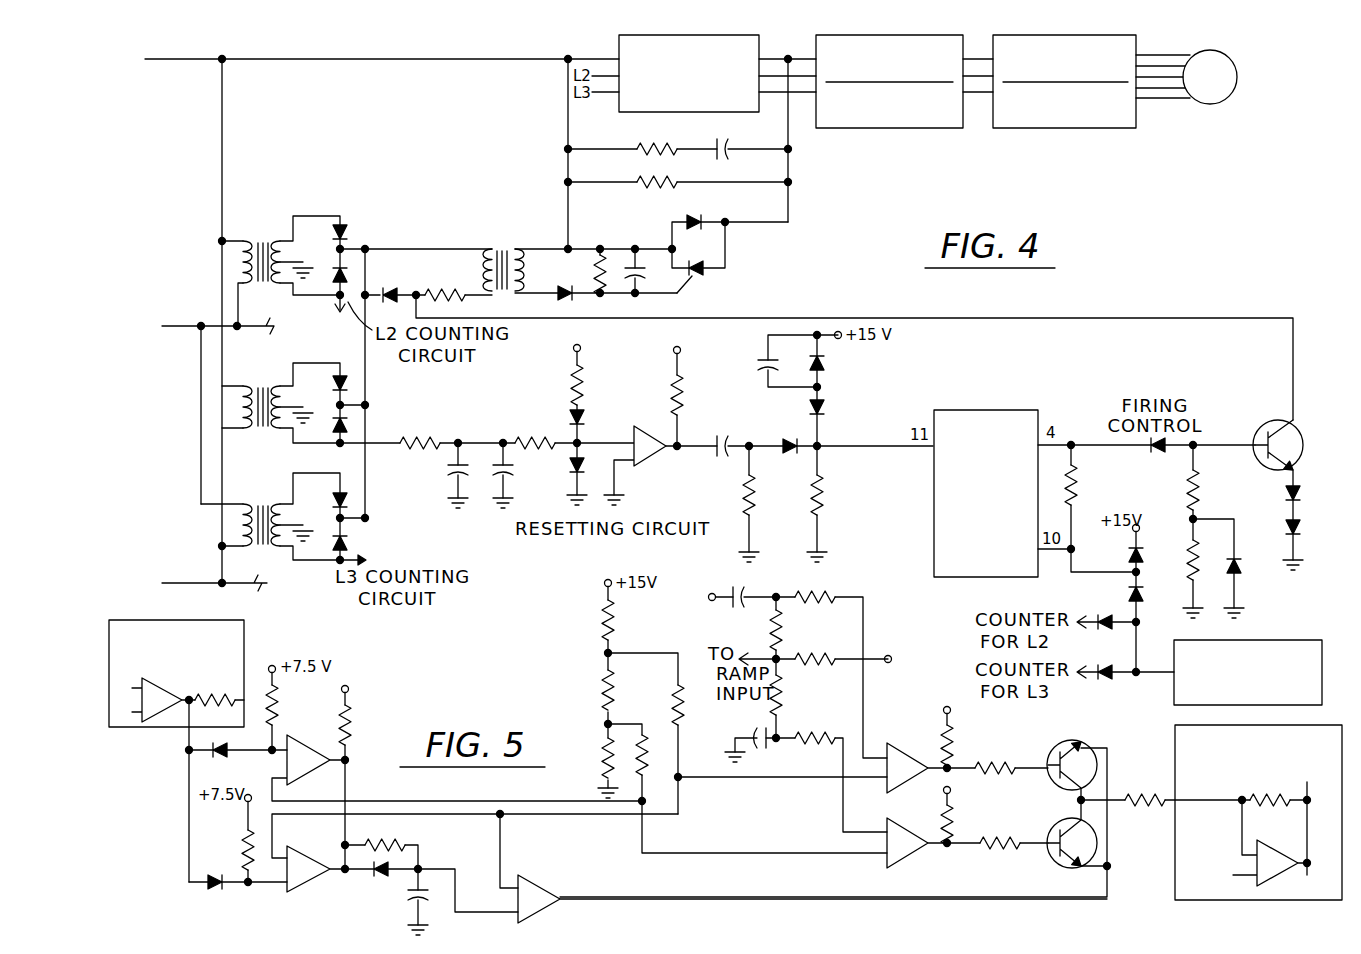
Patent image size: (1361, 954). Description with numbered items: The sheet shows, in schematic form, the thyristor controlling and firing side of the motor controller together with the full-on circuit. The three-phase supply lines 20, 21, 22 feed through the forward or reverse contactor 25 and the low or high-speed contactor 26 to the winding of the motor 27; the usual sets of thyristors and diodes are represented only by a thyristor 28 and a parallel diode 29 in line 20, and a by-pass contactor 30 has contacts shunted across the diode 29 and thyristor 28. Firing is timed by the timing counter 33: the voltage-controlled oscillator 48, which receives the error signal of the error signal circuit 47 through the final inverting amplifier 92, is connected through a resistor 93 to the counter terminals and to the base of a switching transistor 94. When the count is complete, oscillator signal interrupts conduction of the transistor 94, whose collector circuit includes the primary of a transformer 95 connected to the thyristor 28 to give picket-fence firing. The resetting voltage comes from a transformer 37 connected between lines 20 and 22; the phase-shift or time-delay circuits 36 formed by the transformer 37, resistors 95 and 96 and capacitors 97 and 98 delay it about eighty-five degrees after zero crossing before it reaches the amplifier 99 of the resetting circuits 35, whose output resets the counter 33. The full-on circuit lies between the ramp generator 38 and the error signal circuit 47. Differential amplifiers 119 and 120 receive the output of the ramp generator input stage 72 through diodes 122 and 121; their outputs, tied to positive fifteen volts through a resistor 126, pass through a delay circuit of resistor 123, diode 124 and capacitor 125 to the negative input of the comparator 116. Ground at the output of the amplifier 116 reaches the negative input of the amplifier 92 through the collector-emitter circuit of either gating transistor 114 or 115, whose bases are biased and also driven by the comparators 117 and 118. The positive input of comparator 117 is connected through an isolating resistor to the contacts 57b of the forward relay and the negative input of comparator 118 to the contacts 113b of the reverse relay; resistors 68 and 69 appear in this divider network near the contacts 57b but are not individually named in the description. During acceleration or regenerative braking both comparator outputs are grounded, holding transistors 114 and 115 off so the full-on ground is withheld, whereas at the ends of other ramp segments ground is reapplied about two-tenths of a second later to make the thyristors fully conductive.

In FIG. 4, the line L1 20 is at (182, 58).
In FIG. 4, the line L2 21 is at (182, 337).
In FIG. 4, the line L3 22 is at (176, 590).
In FIG. 4, the forward or reverse contactor 25 is at (956, 128).
In FIG. 4, the low or high-speed contactor 26 is at (1131, 128).
In FIG. 4, the motor 27 is at (1204, 103).
In FIG. 4, the thyristor 28 is at (704, 276).
In FIG. 4, the parallel diode 29 is at (704, 218).
In FIG. 4, the by-pass contactor 30 is at (656, 113).
In FIG. 4, the timing counter 33 is at (990, 410).
In FIG. 4, the counter resetting circuits 35 is at (644, 413).
In FIG. 4, the phase-shift or time-delay circuits 36 is at (484, 413).
In FIG. 4, the transformer 37 is at (295, 405).
In FIG. 5, the ramp generator 38 is at (244, 658).
In FIG. 5, the error signal circuit 47 is at (1175, 752).
In FIG. 4, the voltage-controlled oscillator 48 is at (1268, 642).
In FIG. 5, the contacts of the forward relay 57b is at (728, 593).
In FIG. 5, the resistor 68 is at (790, 652).
In FIG. 5, the resistor 69 is at (834, 669).
In FIG. 5, the input stage of the ramp generator 72 is at (176, 696).
In FIG. 5, the final inverting amplifier 92 is at (1284, 846).
In FIG. 4, the resistor 93 is at (1077, 494).
In FIG. 4, the switching transistor 94 is at (1300, 452).
In FIG. 4, the transformer 95 is at (512, 248).
In FIG. 4, the resistor 96 is at (551, 436).
In FIG. 4, the capacitor 97 is at (436, 475).
In FIG. 4, the capacitor 98 is at (512, 474).
In FIG. 4, the amplifier 99 is at (660, 462).
In FIG. 5, the contacts of the reverse relay 113b is at (774, 733).
In FIG. 5, the transistor 114 is at (1070, 749).
In FIG. 5, the transistor 115 is at (1059, 838).
In FIG. 5, the differential amplifier or comparator 116 is at (540, 890).
In FIG. 5, the differential comparator 117 is at (919, 758).
In FIG. 5, the differential comparator 118 is at (919, 840).
In FIG. 5, the differential amplifier 119 is at (322, 731).
In FIG. 5, the differential amplifier 120 is at (319, 886).
In FIG. 5, the diode 121 is at (217, 876).
In FIG. 5, the diode 122 is at (238, 758).
In FIG. 5, the resistor 123 is at (399, 843).
In FIG. 5, the diode 124 is at (393, 886).
In FIG. 5, the capacitor 125 is at (406, 906).
In FIG. 5, the resistor 126 is at (352, 744).